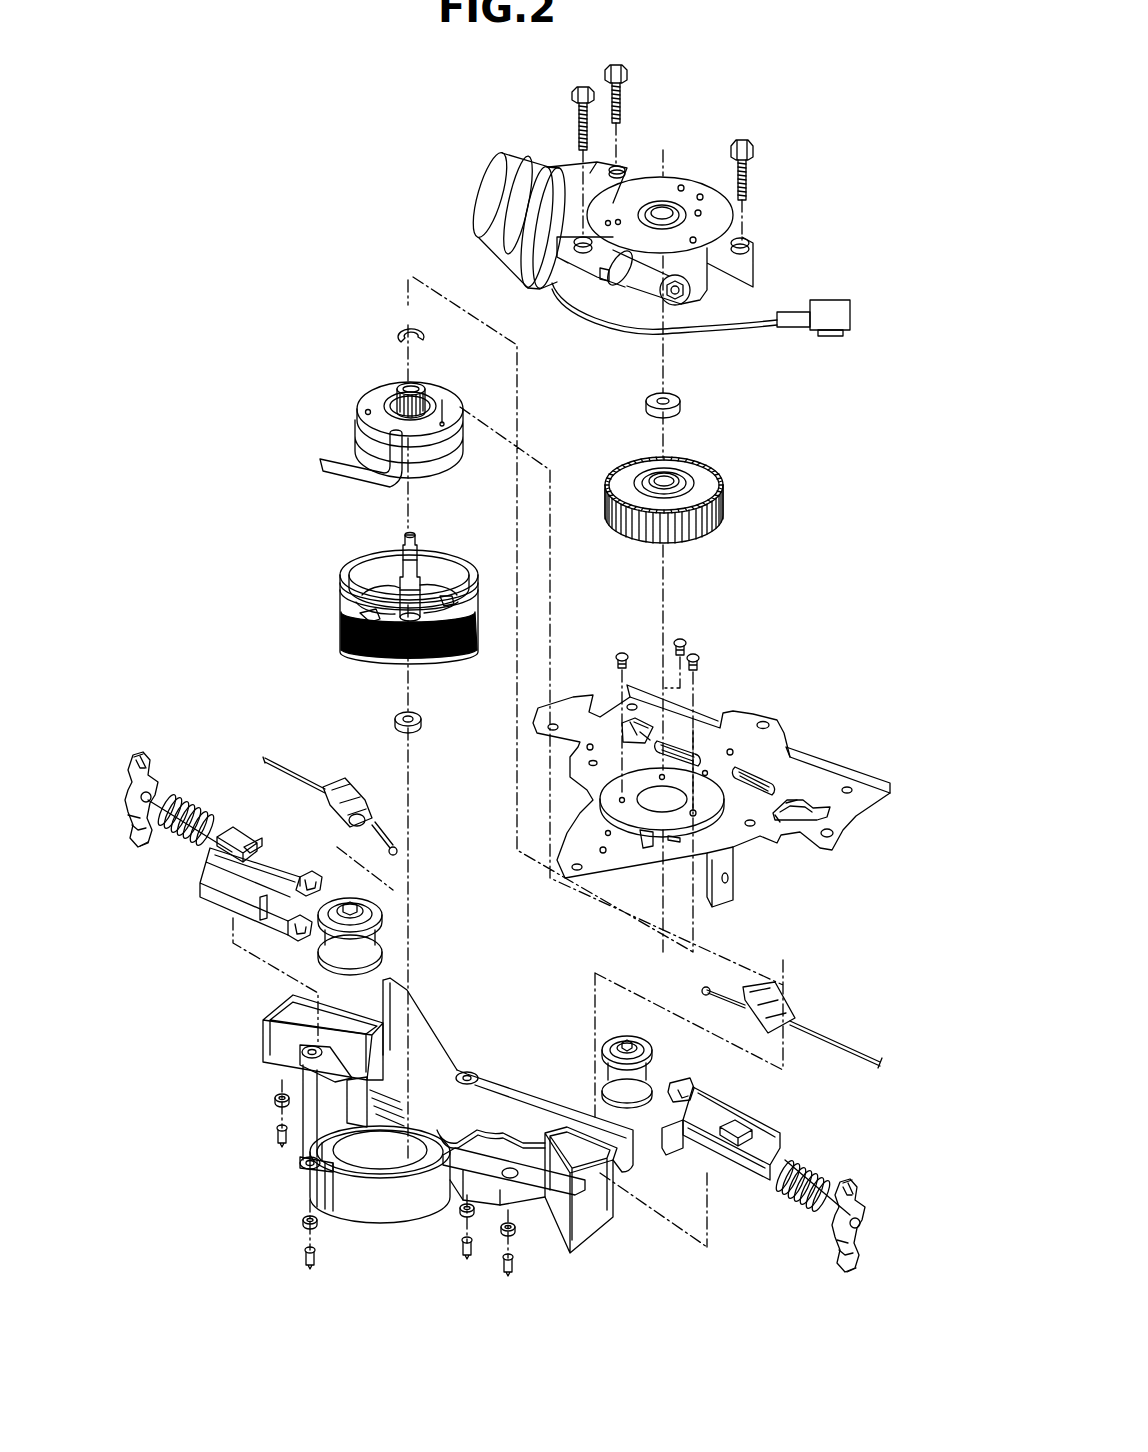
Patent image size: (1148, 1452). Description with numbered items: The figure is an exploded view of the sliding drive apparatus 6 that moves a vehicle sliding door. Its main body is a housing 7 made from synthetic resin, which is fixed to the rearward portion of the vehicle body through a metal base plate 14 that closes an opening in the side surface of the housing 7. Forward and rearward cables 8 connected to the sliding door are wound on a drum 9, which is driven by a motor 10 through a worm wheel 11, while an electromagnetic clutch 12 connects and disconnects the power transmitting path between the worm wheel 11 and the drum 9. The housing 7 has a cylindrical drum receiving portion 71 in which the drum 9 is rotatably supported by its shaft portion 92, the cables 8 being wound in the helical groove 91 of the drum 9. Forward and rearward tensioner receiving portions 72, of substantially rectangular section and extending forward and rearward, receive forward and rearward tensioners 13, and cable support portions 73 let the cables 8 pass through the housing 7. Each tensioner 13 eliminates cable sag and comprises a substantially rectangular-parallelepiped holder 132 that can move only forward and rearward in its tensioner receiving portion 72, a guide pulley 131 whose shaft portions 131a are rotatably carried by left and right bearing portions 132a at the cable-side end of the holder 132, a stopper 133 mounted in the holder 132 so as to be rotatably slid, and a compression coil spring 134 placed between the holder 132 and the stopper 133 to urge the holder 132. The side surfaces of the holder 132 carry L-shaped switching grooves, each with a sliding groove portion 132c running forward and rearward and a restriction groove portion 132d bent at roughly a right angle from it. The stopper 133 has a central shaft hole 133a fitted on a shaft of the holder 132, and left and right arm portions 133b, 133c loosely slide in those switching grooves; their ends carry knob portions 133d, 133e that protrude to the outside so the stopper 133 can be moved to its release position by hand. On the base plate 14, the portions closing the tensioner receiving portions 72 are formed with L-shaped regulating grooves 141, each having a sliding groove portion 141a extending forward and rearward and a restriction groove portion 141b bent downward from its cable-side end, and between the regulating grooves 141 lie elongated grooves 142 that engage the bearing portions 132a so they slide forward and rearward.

The sliding drive apparatus 6 is at (800, 455).
The housing 7 is at (394, 1230).
The cable 8 is at (292, 772).
The drum 9 is at (352, 559).
The motor 10 is at (476, 173).
The worm wheel 11 is at (722, 492).
The electromagnetic clutch 12 is at (360, 399).
The tensioner 13 is at (218, 900).
The base plate 14 is at (833, 761).
The drum receiving portion 71 is at (327, 1143).
The tensioner receiving portion 72 is at (280, 1012).
The cable support portion 73 is at (407, 996).
The helical groove 91 is at (340, 622).
The shaft portion 92 is at (421, 577).
The guide pulley 131 is at (380, 894).
The shaft portion 131a is at (356, 905).
The holder 132 is at (258, 843).
The bearing portion 132a is at (298, 886).
The sliding groove portion 132c is at (232, 845).
The restriction groove portion 132d is at (253, 850).
The stopper 133 is at (150, 764).
The shaft hole 133a is at (133, 806).
The arm portion 133b is at (128, 778).
The arm portion 133c is at (132, 827).
The knob portion 133d is at (135, 760).
The knob portion 133e is at (150, 851).
The compression coil spring 134 is at (171, 848).
The regulating groove 141 is at (621, 717).
The sliding groove portion 141a is at (627, 724).
The restriction groove portion 141b is at (638, 729).
The elongated groove 142 is at (688, 764).